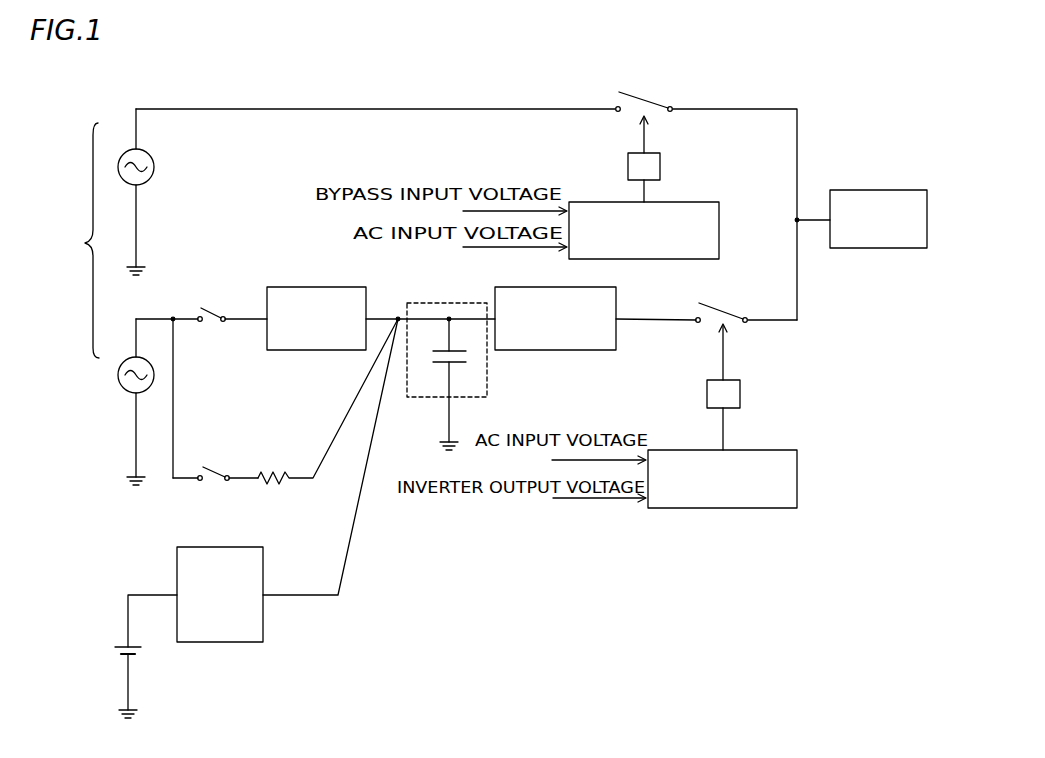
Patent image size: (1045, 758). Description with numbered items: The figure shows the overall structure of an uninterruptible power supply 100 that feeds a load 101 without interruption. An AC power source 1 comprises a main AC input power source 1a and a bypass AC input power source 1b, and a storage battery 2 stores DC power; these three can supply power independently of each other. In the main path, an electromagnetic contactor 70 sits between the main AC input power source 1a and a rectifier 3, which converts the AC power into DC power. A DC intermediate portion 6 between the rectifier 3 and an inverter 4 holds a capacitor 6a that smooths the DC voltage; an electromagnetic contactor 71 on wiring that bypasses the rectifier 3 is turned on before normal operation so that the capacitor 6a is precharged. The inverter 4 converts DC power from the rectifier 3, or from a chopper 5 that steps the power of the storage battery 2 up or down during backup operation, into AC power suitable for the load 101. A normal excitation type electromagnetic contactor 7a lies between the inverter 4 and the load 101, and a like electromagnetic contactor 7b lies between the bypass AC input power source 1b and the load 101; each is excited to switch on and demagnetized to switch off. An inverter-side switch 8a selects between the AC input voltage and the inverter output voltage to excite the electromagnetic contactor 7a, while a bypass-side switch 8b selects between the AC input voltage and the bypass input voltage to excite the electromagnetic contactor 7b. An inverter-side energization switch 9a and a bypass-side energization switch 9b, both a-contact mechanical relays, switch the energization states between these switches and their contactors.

The uninterruptible power supply 100 is at (120, 90).
The AC power source 1 is at (84, 240).
The main AC input power source 1a is at (128, 361).
The bypass AC input power source 1b is at (128, 152).
The electromagnetic contactor 70 is at (219, 304).
The electromagnetic contactor 71 is at (219, 466).
The rectifier 3 is at (340, 287).
The DC intermediate portion 6 is at (417, 303).
The capacitor 6a is at (459, 366).
The inverter 4 is at (613, 288).
The chopper 5 is at (242, 547).
The storage battery 2 is at (122, 646).
The electromagnetic contactor 7a is at (724, 309).
The electromagnetic contactor 7b is at (658, 97).
The inverter-side switch 8a is at (793, 440).
The bypass-side switch 8b is at (718, 192).
The inverter-side energization switch 9a is at (740, 396).
The bypass-side energization switch 9b is at (627, 168).
The load 101 is at (894, 190).